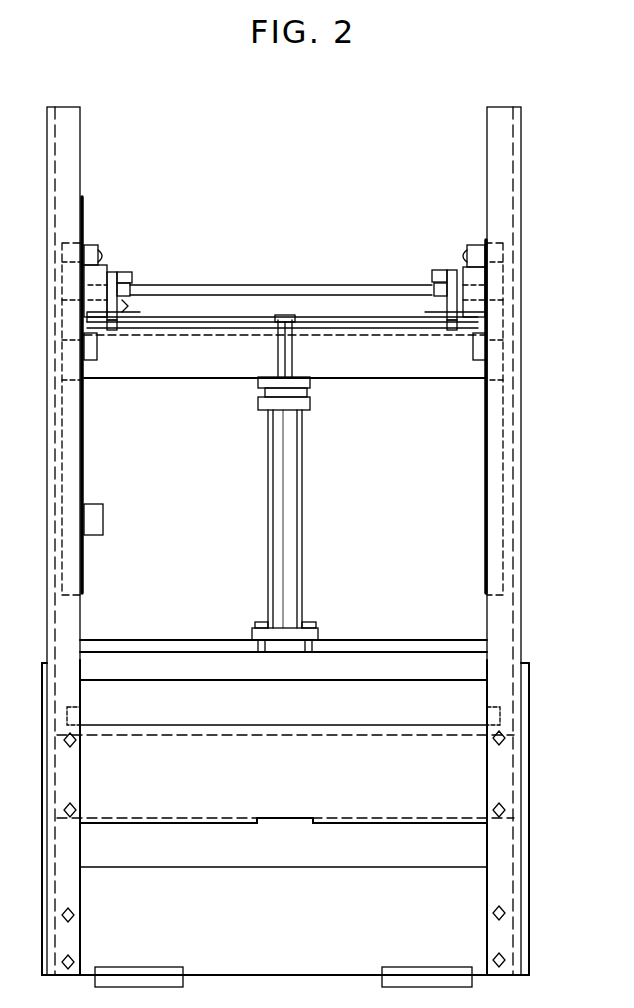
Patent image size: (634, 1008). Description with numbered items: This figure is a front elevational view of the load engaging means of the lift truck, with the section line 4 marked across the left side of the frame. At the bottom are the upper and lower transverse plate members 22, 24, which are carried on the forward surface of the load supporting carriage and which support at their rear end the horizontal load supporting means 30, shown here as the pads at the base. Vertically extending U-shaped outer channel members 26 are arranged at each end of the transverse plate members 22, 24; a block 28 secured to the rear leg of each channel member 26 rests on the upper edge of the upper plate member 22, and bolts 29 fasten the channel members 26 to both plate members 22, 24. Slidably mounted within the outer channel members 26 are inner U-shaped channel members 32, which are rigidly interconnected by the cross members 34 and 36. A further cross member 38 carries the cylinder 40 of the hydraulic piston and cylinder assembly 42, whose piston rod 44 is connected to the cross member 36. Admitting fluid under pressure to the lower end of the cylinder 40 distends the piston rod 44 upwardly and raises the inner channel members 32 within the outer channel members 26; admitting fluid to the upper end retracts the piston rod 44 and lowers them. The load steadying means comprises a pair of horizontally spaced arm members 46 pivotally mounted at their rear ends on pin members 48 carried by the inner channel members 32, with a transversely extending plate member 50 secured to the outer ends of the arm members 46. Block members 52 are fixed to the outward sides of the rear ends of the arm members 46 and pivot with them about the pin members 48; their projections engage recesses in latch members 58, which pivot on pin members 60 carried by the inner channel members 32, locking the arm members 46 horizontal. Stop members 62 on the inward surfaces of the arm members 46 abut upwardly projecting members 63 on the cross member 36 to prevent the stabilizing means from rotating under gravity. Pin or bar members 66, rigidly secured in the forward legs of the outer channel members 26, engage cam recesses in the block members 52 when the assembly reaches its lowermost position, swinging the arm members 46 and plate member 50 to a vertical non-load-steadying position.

The section line 4- 4 is at (82, 209).
The upper transverse plate member 22 is at (285, 751).
The lower transverse plate member 24 is at (283, 897).
The outer channel member 26 is at (70, 151).
The block 28 is at (84, 716).
The bolts 29 is at (78, 806).
The load supporting means 30 is at (136, 970).
The inner channel member 32 is at (86, 451).
The cross member 34 is at (357, 372).
The cross member 36 is at (306, 328).
The cross member 38 is at (214, 652).
The cylinder 40 is at (294, 556).
The hydraulic piston and cylinder assembly 42 is at (323, 467).
The piston rod 44 is at (277, 354).
The arm member 46 is at (112, 275).
The pin member 48 is at (128, 318).
The plate member 50 is at (258, 318).
The block member 52 is at (98, 286).
The latch member 58 is at (92, 245).
The pin member 60 is at (56, 251).
The stop member 62 is at (132, 277).
The upwardly projecting member 63 is at (130, 290).
The pin or bar member 66 is at (97, 350).